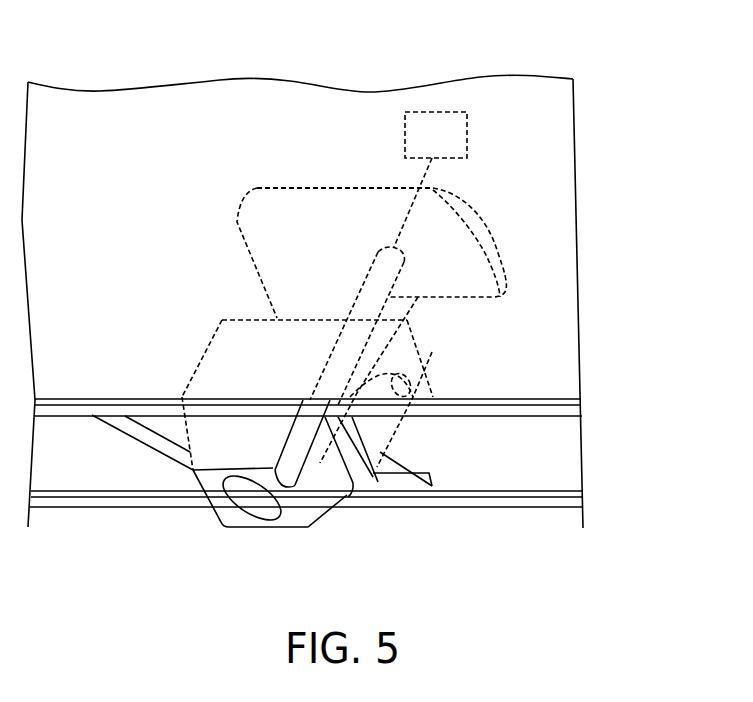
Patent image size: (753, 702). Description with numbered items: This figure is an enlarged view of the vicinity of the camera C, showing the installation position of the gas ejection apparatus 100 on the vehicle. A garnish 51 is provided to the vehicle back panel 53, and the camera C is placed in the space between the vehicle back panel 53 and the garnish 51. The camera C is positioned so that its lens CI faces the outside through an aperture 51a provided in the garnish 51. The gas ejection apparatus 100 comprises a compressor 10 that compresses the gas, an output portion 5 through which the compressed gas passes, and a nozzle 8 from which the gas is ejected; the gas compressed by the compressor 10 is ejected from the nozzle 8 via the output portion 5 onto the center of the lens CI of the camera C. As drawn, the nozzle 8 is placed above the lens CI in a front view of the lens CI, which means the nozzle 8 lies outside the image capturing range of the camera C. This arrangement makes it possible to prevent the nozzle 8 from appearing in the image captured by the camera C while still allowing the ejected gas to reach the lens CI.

The vehicle back panel 53 is at (95, 110).
The compressor 10 is at (467, 133).
The output portion 5 is at (400, 278).
The nozzle 8 is at (298, 452).
The gas ejection apparatus 100 is at (648, 185).
The garnish 51 is at (567, 457).
The aperture 51a is at (135, 435).
The camera C is at (210, 524).
The lens CI is at (271, 510).